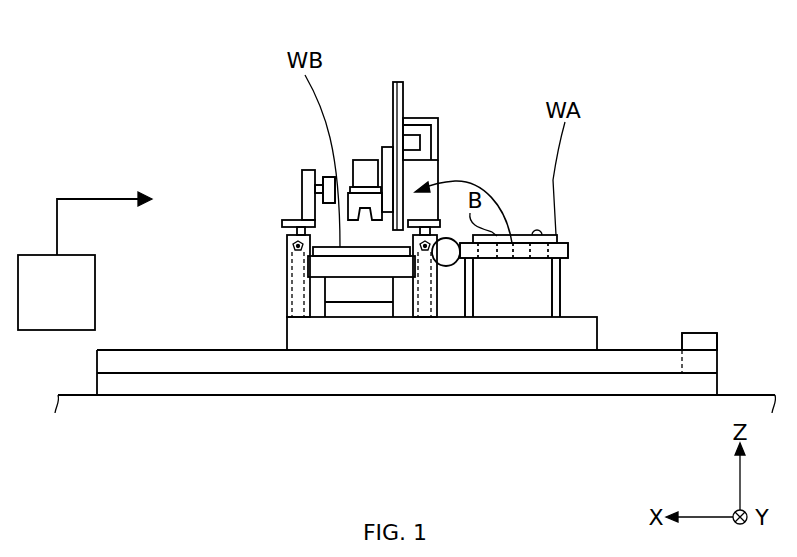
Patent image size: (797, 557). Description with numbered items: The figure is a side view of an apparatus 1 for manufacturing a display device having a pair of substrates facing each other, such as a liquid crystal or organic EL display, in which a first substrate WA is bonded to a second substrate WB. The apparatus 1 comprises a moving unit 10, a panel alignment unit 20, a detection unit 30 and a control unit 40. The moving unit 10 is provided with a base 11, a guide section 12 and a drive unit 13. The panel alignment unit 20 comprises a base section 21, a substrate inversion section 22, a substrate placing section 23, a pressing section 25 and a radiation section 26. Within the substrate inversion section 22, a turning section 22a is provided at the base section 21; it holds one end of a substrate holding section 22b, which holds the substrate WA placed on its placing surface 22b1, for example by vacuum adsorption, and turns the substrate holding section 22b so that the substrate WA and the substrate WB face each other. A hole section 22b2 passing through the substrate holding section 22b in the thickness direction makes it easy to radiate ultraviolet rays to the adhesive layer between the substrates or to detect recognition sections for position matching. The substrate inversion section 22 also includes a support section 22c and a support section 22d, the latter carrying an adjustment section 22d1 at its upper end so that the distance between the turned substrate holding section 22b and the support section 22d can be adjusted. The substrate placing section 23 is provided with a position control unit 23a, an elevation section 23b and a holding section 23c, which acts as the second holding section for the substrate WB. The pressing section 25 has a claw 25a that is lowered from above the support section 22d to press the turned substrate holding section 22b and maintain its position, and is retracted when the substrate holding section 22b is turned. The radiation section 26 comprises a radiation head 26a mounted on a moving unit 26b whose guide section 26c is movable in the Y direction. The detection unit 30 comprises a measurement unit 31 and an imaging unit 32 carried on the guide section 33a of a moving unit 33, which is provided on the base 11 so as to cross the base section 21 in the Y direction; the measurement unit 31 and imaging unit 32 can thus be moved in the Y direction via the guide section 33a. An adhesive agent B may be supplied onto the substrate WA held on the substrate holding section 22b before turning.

The apparatus for manufacturing a display device 1 is at (683, 84).
The moving unit 10 is at (692, 318).
The base 11 is at (642, 385).
The guide section 12 is at (705, 357).
The drive unit 13 is at (705, 338).
The panel alignment unit 20 is at (644, 181).
The base section 21 is at (510, 338).
The substrate inversion section 22 is at (583, 226).
The turning section 22a is at (446, 258).
The substrate holding section 22b is at (570, 250).
The placing surface 22b1 is at (557, 237).
The hole section 22b2 is at (497, 250).
The support section 22c is at (560, 290).
The support section 22d is at (290, 272).
The adjustment section 22d1 is at (292, 246).
The substrate placing section 23 is at (315, 332).
The position control unit 23a is at (370, 310).
The elevation section 23b is at (342, 292).
The holding section 23c is at (355, 267).
The pressing section 25 is at (289, 209).
The claw 25a is at (282, 222).
The radiation section 26 is at (315, 159).
The radiation head 26a is at (322, 180).
The moving unit 26b is at (323, 193).
The guide section 26c is at (322, 186).
The detection unit 30 is at (422, 106).
The measurement unit 31 is at (382, 200).
The imaging unit 32 is at (362, 160).
The moving unit 33 is at (438, 120).
The guide section 33a is at (385, 146).
The control unit 40 is at (52, 305).